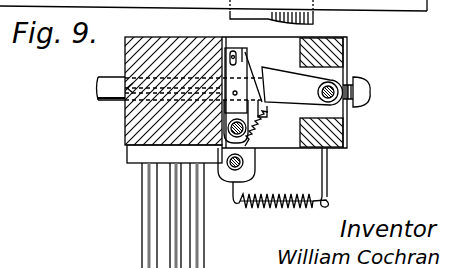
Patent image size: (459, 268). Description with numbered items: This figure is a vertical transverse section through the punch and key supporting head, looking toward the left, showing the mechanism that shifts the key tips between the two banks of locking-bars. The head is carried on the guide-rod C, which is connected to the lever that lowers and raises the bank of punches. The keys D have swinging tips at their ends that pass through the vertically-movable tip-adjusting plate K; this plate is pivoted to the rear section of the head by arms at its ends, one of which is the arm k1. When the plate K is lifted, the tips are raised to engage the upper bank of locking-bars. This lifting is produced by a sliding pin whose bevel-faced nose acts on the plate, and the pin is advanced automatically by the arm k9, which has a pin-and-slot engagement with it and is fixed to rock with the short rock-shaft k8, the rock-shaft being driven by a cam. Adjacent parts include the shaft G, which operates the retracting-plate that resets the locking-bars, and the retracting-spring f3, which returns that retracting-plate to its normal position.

The arm k9 is at (230, 81).
The guide-rod C is at (320, 46).
The arm k1 is at (248, 86).
The tip-adjusting plate K is at (302, 86).
The key D is at (370, 90).
The short rock-shaft k8 is at (252, 132).
The shaft G is at (246, 162).
The retracting-spring f3 is at (281, 178).